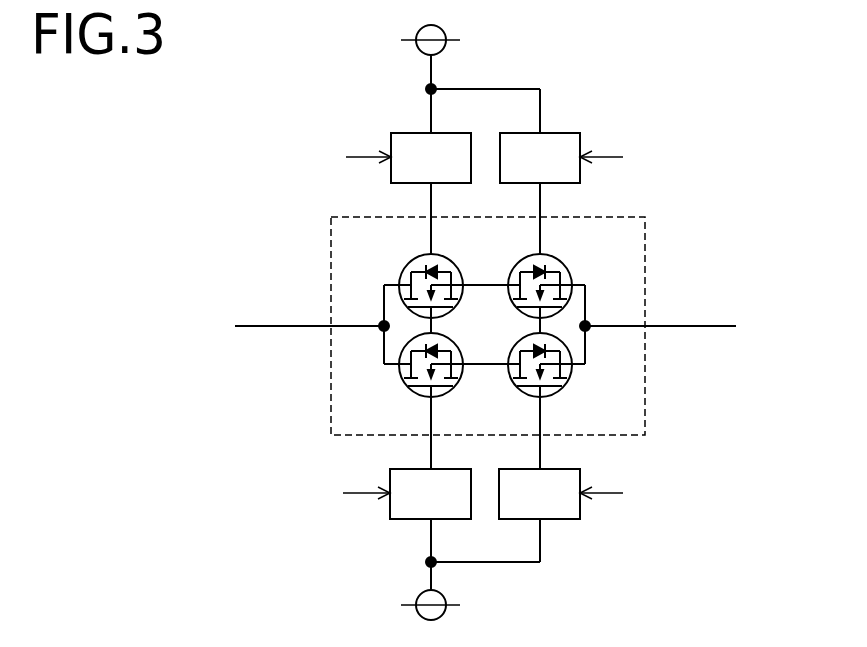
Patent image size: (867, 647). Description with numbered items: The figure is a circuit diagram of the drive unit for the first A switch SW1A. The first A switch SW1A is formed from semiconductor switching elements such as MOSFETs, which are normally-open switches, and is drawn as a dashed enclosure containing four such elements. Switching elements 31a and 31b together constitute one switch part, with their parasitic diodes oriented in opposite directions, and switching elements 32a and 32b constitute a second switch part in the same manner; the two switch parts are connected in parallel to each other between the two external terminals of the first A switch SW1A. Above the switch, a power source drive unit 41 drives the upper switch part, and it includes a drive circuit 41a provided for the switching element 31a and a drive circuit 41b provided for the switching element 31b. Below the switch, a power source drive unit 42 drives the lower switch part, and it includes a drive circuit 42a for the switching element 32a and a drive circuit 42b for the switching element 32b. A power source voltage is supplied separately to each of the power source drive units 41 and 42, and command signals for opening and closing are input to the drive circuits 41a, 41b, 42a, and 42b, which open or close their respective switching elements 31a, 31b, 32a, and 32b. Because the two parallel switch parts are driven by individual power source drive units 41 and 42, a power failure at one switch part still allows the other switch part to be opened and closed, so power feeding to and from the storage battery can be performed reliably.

The power source drive unit 41 is at (484, 96).
The drive circuit 41a is at (566, 132).
The drive circuit 41b is at (404, 132).
The power source drive unit 42 is at (483, 554).
The drive circuit 42a is at (568, 520).
The drive circuit 42b is at (402, 520).
The switching element 31a is at (552, 252).
The switching element 31b is at (420, 256).
The switching element 32a is at (552, 397).
The switching element 32b is at (420, 397).
The first A switch SW1A is at (543, 326).